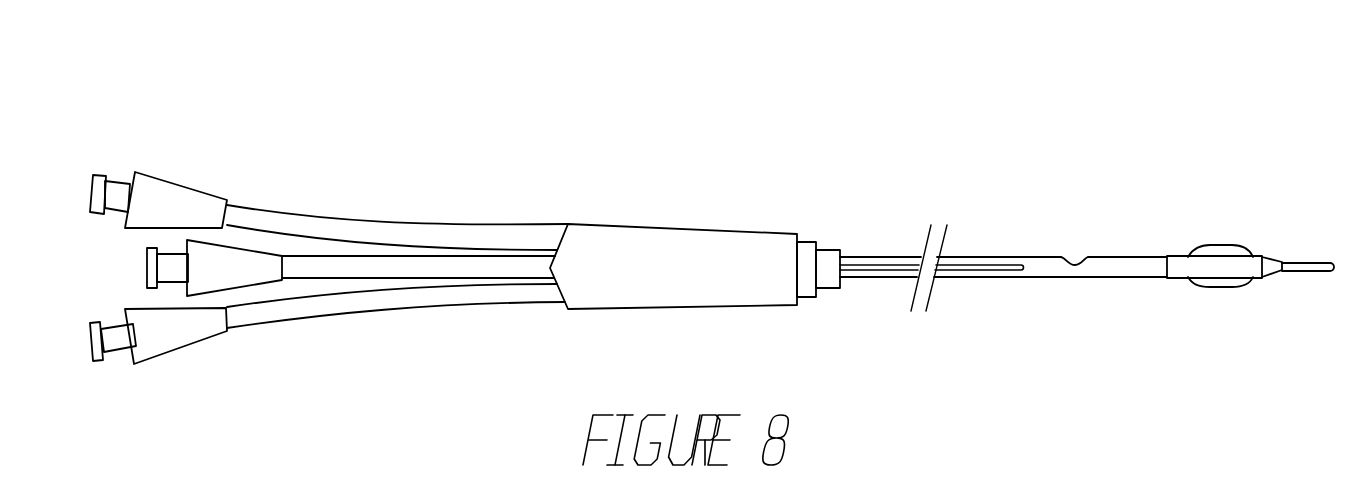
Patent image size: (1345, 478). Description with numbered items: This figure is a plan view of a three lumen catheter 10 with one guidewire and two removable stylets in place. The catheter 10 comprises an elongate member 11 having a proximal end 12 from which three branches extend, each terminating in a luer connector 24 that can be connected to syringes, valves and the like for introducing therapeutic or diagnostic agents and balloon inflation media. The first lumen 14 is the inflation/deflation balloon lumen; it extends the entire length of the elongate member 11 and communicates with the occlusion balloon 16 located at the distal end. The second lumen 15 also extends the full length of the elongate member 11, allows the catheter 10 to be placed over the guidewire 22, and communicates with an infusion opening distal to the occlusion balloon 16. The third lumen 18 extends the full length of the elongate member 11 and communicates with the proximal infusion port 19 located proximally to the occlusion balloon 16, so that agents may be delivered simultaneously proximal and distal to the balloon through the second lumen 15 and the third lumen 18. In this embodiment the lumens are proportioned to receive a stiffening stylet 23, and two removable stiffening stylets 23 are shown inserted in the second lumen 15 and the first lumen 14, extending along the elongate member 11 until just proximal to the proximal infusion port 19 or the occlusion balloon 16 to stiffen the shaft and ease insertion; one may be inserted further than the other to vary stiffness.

The catheter 10 is at (822, 118).
The elongate member 11 is at (883, 255).
The proximal end 12 is at (563, 222).
The first lumen 14 is at (392, 308).
The second lumen 15 is at (467, 277).
The occlusion balloon 16 is at (1215, 247).
The third lumen 18 is at (353, 223).
The proximal infusion port 19 is at (1075, 255).
The guidewire 22 is at (1310, 263).
The stiffening stylet 23 is at (995, 257).
The luer connector 24 is at (175, 182).